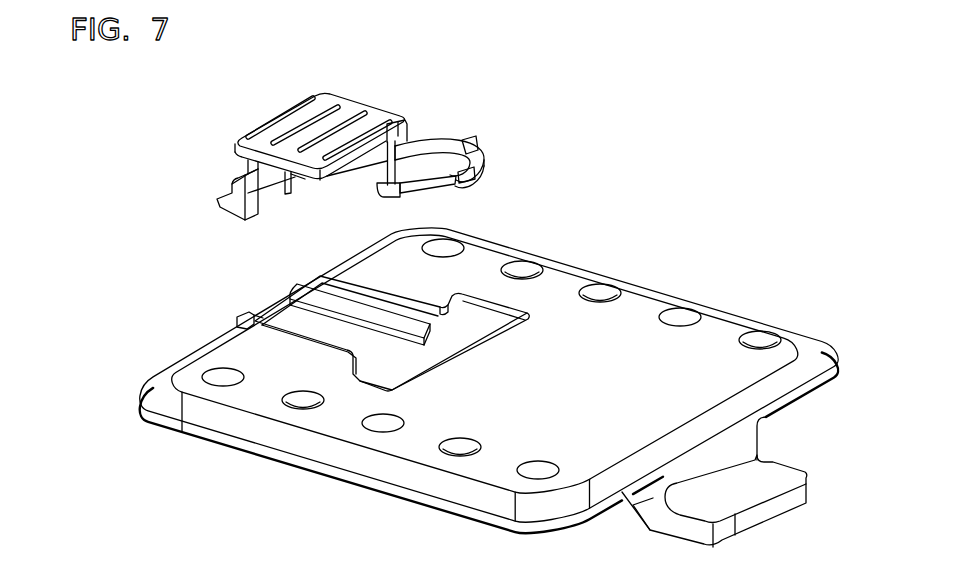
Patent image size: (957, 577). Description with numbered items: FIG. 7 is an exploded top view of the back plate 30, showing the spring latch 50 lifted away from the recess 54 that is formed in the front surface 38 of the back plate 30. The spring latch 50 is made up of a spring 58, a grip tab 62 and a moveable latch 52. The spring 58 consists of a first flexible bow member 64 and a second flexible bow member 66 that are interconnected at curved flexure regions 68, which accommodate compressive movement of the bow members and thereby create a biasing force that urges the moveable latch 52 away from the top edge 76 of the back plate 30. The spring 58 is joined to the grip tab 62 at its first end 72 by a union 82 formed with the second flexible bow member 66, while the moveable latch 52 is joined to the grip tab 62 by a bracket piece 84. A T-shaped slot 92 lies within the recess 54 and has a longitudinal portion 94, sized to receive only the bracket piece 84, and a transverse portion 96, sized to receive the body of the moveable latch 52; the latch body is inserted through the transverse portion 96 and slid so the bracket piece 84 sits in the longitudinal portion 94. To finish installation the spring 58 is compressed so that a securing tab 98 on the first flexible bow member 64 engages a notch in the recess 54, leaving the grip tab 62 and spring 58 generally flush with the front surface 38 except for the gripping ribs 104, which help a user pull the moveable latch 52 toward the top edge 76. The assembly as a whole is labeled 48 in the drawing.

The back plate 30 is at (148, 179).
The front surface 38 is at (615, 335).
The slider plate 48 is at (315, 91).
The spring latch 50 is at (395, 58).
The moveable latch 52 is at (230, 207).
The recess 54 is at (386, 316).
The spring 58 is at (480, 163).
The grip tab 62 is at (345, 113).
The first flexible bow member 64 is at (425, 190).
The second flexible bow member 66 is at (423, 150).
The curved flexure regions 68 is at (470, 141).
The first end 72 is at (401, 128).
The top edge 76 is at (790, 403).
The union 82 is at (385, 158).
The bracket piece 84 is at (293, 184).
The slot 92 is at (311, 328).
The longitudinal portion 94 is at (286, 330).
The transverse portion 96 is at (388, 366).
The securing tab 98 is at (472, 180).
The gripping ribs 104 is at (302, 123).